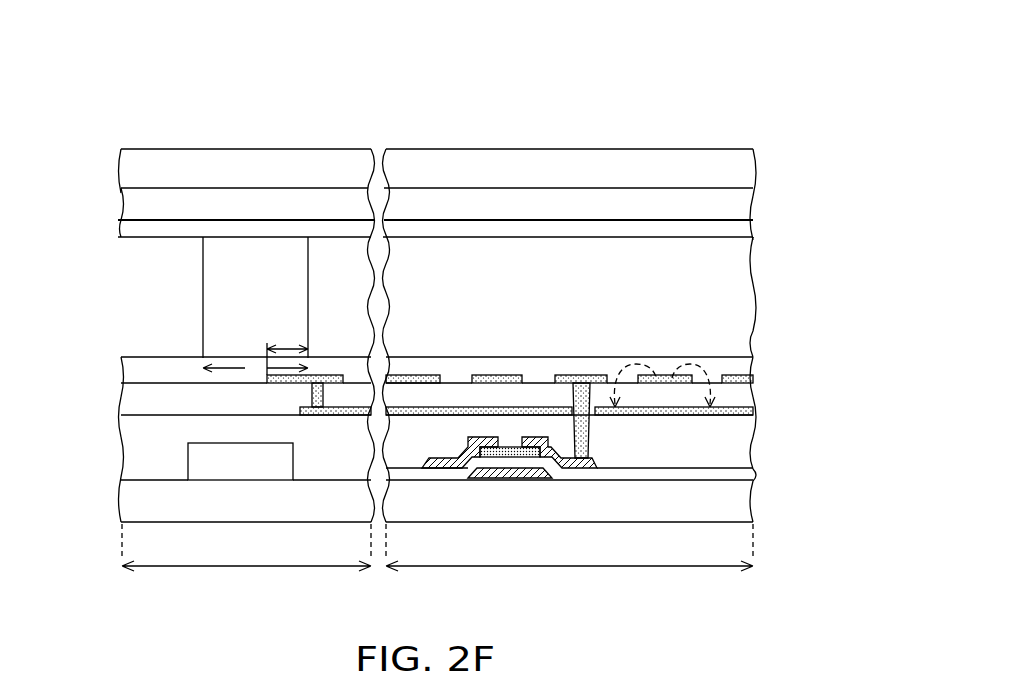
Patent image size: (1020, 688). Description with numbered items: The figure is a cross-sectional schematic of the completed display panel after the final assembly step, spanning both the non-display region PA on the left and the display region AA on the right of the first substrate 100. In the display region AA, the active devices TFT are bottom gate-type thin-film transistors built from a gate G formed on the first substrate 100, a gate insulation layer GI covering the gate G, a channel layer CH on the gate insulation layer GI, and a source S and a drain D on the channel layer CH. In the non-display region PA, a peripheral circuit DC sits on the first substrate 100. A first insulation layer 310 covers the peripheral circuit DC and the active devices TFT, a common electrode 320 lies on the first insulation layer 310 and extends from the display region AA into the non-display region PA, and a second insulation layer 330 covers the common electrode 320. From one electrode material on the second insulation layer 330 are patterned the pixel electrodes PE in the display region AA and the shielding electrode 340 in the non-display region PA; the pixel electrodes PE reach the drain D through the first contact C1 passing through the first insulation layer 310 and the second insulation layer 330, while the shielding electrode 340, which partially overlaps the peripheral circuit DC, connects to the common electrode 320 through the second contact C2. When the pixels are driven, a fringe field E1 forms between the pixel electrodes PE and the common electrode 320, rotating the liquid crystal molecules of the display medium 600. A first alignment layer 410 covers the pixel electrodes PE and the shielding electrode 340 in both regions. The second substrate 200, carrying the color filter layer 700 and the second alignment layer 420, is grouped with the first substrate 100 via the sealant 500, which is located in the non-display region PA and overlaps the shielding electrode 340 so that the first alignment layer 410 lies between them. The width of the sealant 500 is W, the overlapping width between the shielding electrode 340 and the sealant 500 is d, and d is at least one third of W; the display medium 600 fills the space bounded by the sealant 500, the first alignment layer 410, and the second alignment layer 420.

The first substrate 100 is at (745, 507).
The gate insulation layer GI is at (745, 475).
The first insulation layer 310 is at (742, 450).
The common electrode 320 is at (743, 412).
The second insulation layer 330 is at (743, 393).
The pixel electrodes PE is at (752, 379).
The first alignment layer 410 is at (745, 365).
The second alignment layer 420 is at (128, 228).
The display medium layer 600 is at (736, 260).
The color filter layer 700 is at (127, 205).
The second substrate 200 is at (124, 170).
The sealant 500 is at (215, 307).
The first contact C1 is at (583, 382).
The second contact C2 is at (320, 375).
The fringe field E1 is at (703, 365).
The shielding electrode 340 is at (225, 381).
The peripheral circuit DC is at (200, 460).
The source S is at (447, 467).
The gate G is at (498, 473).
The channel layer CH is at (527, 455).
The drain D is at (577, 463).
The active devices TFT is at (669, 8).
The non-display region PA is at (246, 561).
The display region AA is at (569, 561).
The width of the sealant W is at (255, 368).
The overlapping width d is at (287, 350).